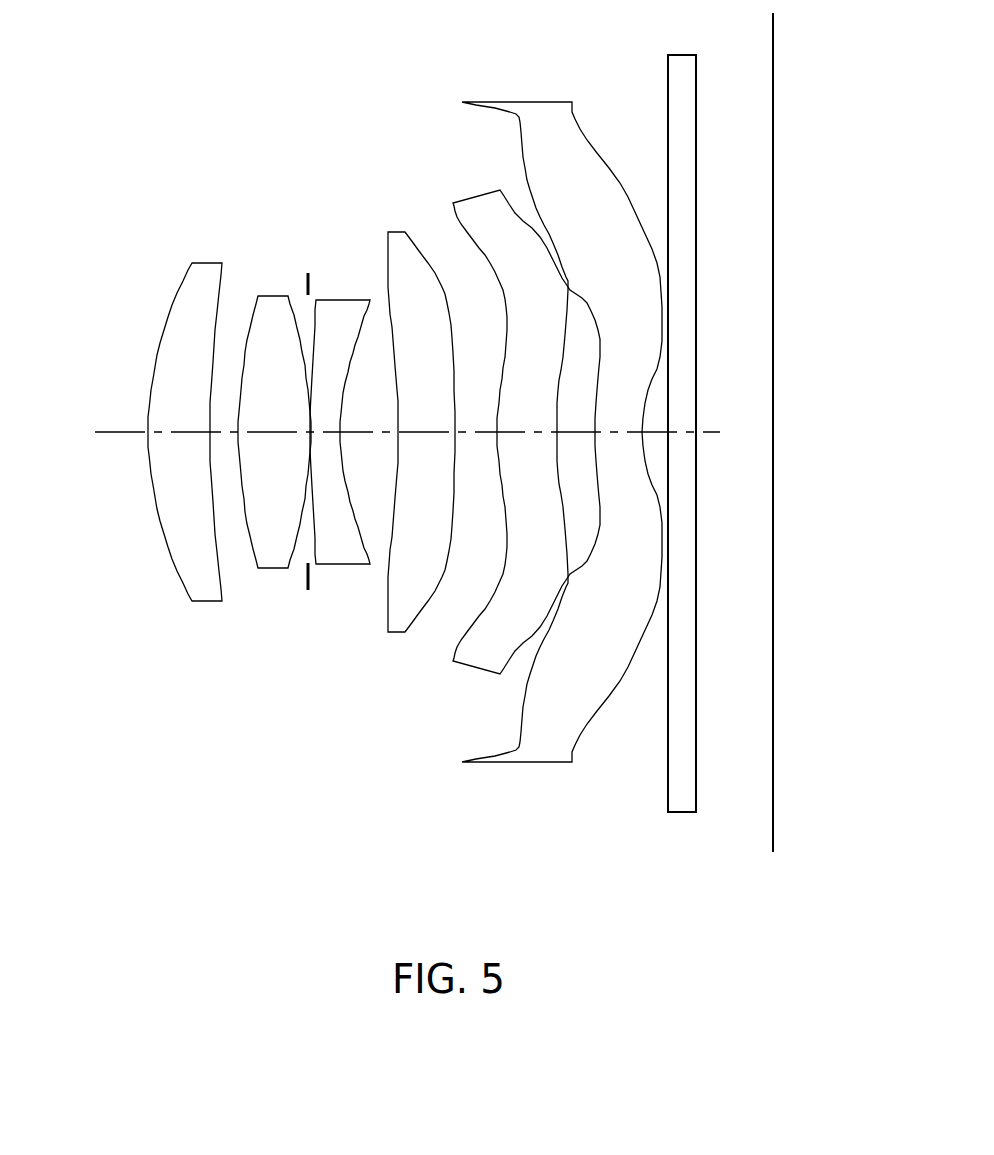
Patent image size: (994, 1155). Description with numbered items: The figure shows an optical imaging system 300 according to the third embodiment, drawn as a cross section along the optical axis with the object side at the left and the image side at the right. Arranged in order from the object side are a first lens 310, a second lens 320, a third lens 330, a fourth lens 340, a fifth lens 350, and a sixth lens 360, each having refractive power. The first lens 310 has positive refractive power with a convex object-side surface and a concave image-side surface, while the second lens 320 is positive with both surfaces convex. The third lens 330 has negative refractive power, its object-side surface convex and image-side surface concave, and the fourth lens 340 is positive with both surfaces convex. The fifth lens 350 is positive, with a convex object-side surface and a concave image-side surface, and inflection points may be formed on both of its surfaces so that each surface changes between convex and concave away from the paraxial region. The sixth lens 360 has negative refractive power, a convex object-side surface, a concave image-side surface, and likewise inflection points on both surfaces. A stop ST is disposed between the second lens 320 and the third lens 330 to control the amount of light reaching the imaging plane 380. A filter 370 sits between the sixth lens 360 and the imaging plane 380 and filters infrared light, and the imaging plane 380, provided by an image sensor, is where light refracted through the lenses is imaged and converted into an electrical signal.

The optical imaging system 300 is at (393, 157).
The first lens 310 is at (207, 602).
The second lens 320 is at (273, 568).
The third lens 330 is at (343, 565).
The fourth lens 340 is at (397, 637).
The fifth lens 350 is at (467, 675).
The sixth lens 360 is at (532, 765).
The filter 370 is at (680, 813).
The imaging plane 380 is at (772, 837).
The stop ST is at (309, 284).